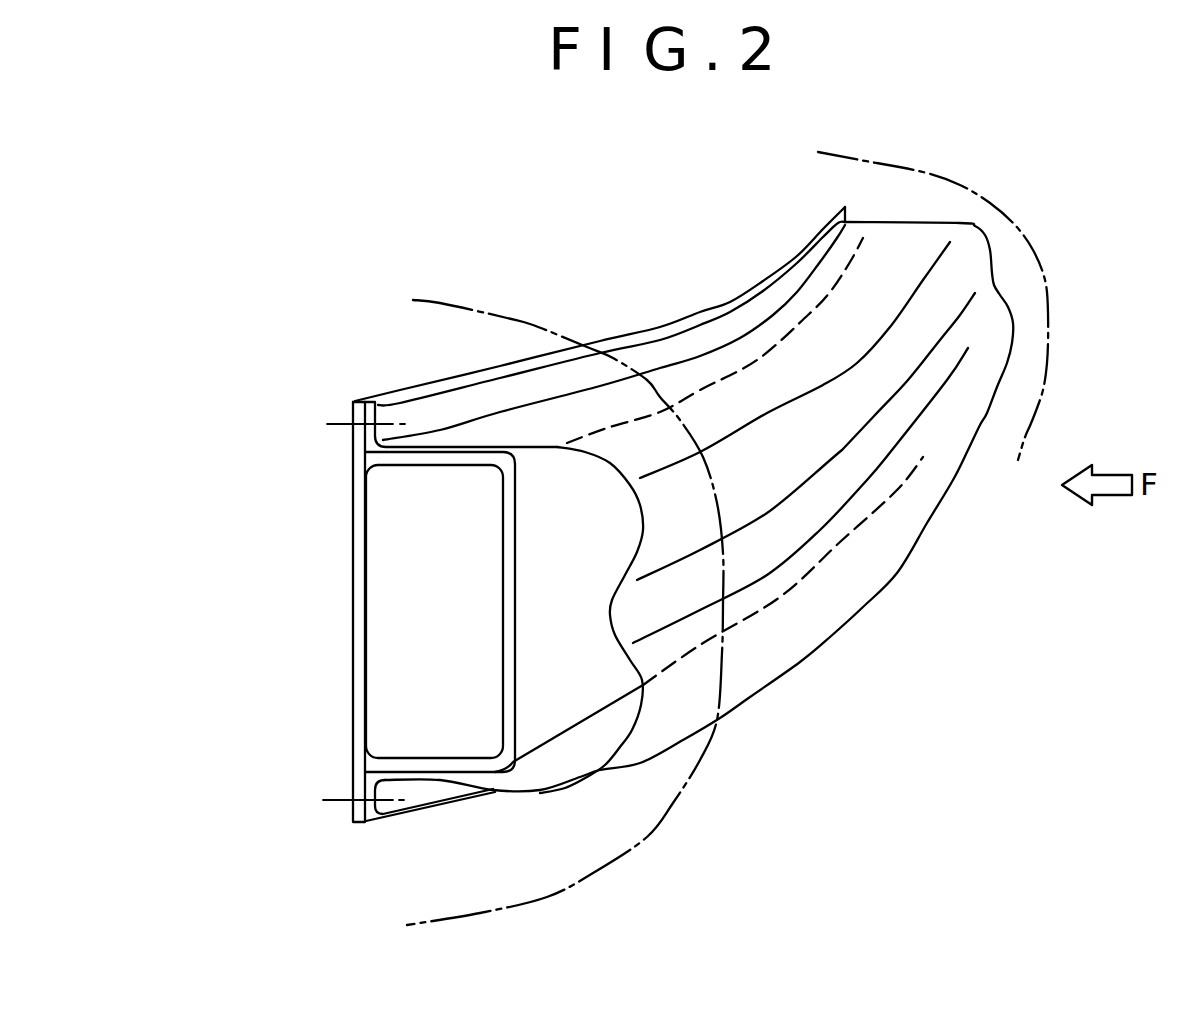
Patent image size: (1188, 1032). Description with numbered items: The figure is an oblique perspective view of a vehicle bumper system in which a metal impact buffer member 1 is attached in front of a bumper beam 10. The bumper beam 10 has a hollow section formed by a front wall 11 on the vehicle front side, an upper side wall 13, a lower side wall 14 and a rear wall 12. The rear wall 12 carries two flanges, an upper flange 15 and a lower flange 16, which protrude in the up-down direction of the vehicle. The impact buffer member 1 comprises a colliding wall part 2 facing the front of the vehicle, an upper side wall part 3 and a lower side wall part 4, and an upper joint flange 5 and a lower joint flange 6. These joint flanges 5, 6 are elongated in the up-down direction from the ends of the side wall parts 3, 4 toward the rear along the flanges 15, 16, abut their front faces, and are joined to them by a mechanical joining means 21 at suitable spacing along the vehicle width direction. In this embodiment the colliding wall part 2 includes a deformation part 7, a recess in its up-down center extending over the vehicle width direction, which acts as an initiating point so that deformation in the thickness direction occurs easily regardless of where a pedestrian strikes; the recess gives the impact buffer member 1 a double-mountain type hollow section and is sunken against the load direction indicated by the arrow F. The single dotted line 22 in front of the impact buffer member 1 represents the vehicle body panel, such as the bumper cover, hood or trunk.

The impact buffer member 1 is at (882, 623).
The colliding wall part 2 is at (773, 583).
The upper side wall part 3 is at (598, 407).
The lower side wall part 4 is at (553, 795).
The upper joint flange 5 is at (478, 405).
The lower joint flange 6 is at (427, 793).
The deformation part 7 is at (647, 603).
The bumper beam 10 is at (273, 463).
The front wall 11 is at (552, 622).
The rear wall 12 is at (353, 605).
The upper side wall 13 is at (437, 452).
The lower side wall 14 is at (413, 755).
The upper flange 15 is at (355, 408).
The lower flange 16 is at (350, 814).
The mechanical joining means 21 is at (340, 423).
The vehicle body panel 22 is at (880, 190).